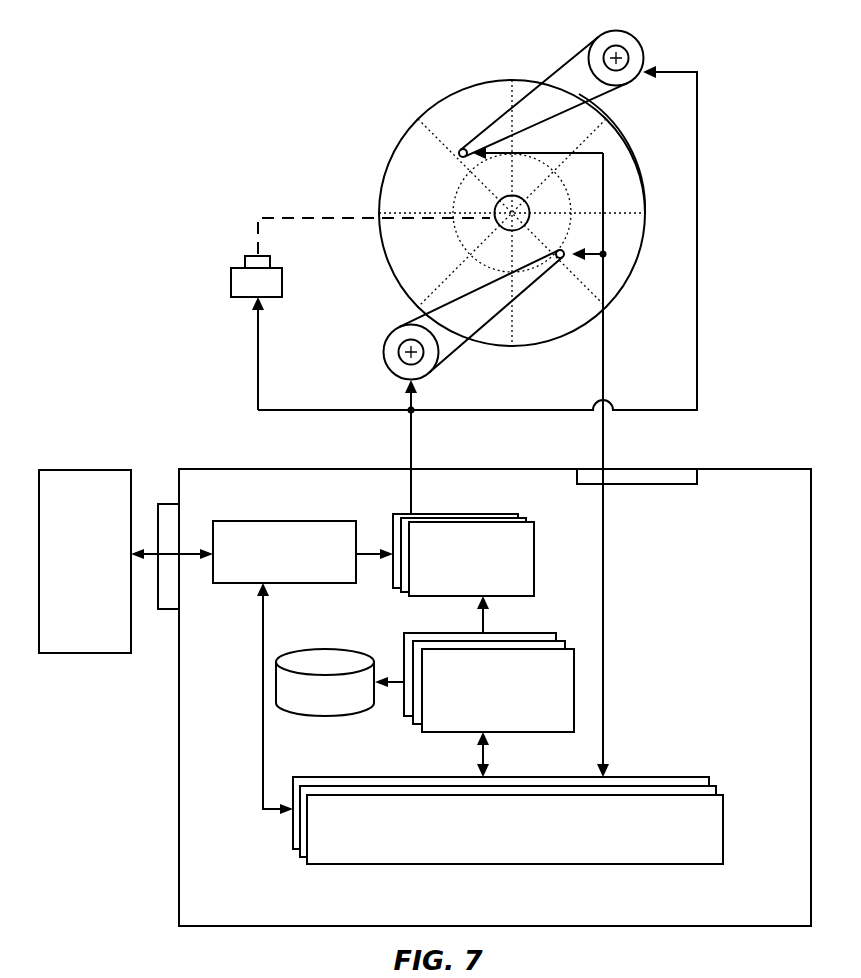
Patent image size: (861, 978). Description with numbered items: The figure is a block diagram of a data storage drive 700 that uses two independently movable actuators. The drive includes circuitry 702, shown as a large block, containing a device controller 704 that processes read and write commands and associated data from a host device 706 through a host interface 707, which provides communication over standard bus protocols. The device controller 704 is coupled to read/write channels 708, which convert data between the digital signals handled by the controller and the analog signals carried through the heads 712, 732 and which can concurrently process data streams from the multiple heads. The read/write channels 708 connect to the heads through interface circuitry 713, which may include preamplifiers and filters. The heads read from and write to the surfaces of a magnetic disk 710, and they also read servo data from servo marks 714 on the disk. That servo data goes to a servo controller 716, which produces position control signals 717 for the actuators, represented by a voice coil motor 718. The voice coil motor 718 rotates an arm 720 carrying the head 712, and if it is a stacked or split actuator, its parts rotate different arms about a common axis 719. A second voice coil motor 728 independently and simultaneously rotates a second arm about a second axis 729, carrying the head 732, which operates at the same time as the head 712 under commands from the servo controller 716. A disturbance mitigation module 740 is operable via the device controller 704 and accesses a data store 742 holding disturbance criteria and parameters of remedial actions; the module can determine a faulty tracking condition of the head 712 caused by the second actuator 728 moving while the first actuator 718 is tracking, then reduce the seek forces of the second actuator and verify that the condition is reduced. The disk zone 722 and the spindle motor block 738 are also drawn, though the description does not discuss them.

The data storage drive 700 is at (118, 209).
The circuitry 702 is at (182, 469).
The device controller 704 is at (245, 521).
The host device 706 is at (70, 469).
The host interface 707 is at (157, 610).
The read/write channels 708 is at (670, 777).
The magnetic disk 710 is at (425, 112).
The head 712 is at (558, 260).
The interface circuitry 713 is at (697, 480).
The servo marks 714 is at (605, 130).
The servo controller 716 is at (468, 514).
The position control signals 717 is at (410, 436).
The voice coil motor 718 is at (384, 352).
The common axis 719 is at (400, 356).
The arm 720 is at (443, 317).
The inner disk zone 722 is at (452, 203).
The second voice coil motor 728 is at (652, 52).
The second axis 729 is at (627, 56).
The head 732 is at (463, 148).
The spindle motor 738 is at (231, 282).
The disturbance mitigation module 740 is at (432, 633).
The data store 742 is at (318, 655).